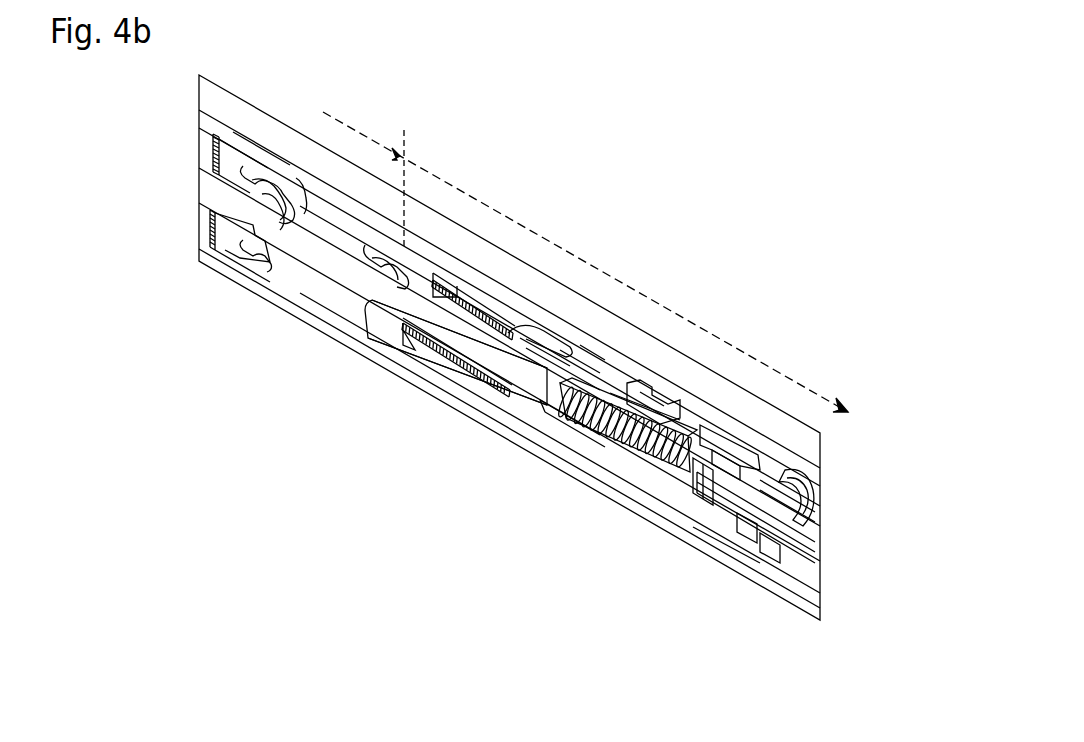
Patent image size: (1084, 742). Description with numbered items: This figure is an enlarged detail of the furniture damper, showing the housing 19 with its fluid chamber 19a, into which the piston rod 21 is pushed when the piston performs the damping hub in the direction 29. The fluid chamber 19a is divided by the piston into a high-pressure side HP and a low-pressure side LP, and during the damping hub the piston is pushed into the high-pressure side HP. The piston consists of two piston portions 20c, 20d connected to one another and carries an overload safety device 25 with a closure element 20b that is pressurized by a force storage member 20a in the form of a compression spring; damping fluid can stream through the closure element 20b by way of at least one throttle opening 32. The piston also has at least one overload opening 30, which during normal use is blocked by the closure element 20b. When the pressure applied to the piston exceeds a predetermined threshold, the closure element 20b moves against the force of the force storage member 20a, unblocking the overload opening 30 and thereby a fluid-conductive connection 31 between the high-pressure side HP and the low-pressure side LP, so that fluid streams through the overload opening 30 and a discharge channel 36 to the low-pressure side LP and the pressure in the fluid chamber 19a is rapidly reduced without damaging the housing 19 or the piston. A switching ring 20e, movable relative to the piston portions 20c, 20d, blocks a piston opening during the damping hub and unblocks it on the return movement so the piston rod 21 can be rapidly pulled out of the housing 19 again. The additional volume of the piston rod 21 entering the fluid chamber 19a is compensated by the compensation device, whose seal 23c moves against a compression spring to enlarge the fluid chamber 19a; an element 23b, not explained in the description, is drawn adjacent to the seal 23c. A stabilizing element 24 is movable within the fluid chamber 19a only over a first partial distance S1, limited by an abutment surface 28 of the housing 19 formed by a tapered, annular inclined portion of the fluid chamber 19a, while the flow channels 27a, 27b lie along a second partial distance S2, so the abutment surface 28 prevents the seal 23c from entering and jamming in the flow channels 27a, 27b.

The housing 19 is at (213, 260).
The fluid chamber 19a is at (807, 543).
The force storage member 20a is at (605, 410).
The closure element 20b is at (673, 447).
The piston portion 20c is at (578, 435).
The piston portion 20d is at (778, 512).
The switching ring 20e is at (735, 530).
The piston rod 21 is at (333, 266).
The receiving pocket 23b is at (207, 145).
The seal 23c is at (235, 160).
The stabilizing element 24 is at (385, 333).
The overload safety device 25 is at (697, 442).
The flow channel 27a is at (497, 327).
The flow channel 27b is at (477, 287).
The abutment surface 28 is at (397, 353).
The direction 29 is at (417, 620).
The overload opening 30 is at (745, 462).
The fluid-conductive connection 31 is at (593, 353).
The throttle opening 32 is at (680, 508).
The discharge channel 36 is at (648, 385).
The first partial distance S1 is at (585, 251).
The second partial distance S2 is at (868, 426).
The high-pressure side HP is at (807, 535).
The low-pressure side LP is at (335, 307).